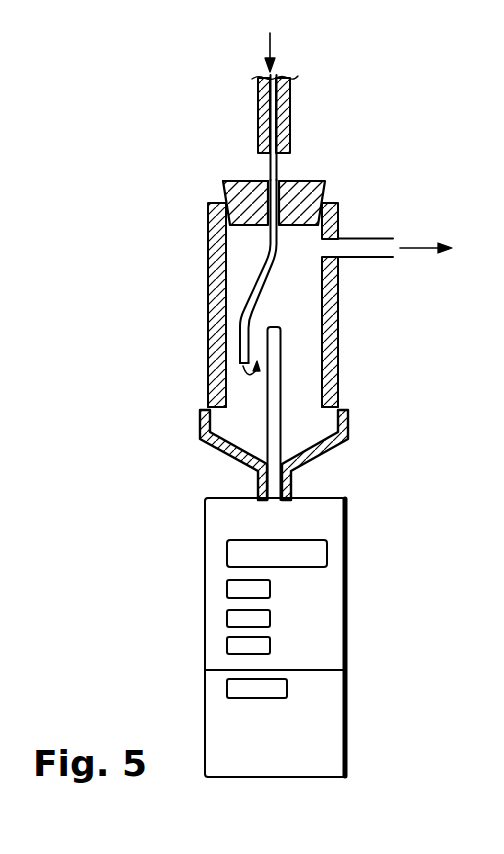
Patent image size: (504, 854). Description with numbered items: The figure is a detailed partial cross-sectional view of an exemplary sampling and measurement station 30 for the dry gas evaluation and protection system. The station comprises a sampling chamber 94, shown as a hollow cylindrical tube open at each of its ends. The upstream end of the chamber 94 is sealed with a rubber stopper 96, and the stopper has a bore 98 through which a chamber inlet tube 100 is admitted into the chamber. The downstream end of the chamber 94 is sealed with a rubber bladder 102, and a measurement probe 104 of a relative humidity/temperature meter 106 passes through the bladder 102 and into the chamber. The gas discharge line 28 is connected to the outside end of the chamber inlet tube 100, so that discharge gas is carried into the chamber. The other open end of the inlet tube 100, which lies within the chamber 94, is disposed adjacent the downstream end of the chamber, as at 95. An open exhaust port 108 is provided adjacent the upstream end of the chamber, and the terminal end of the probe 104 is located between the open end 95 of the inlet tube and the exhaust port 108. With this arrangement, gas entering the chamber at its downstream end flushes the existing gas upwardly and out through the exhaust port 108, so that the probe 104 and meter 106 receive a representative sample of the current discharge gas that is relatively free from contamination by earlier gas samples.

The sampling and measurement station 30 is at (232, 117).
The gas discharge line 28 is at (292, 100).
The rubber stopper 96 is at (318, 180).
The bore 98 is at (238, 180).
The sampling chamber 94 is at (207, 317).
The exhaust port 108 is at (374, 247).
The chamber inlet tube 100 is at (266, 251).
The open end of the inlet tube 95 is at (238, 369).
The measurement probe 104 is at (282, 393).
The rubber bladder 102 is at (226, 457).
The relative humidity/temperature meter 106 is at (348, 600).